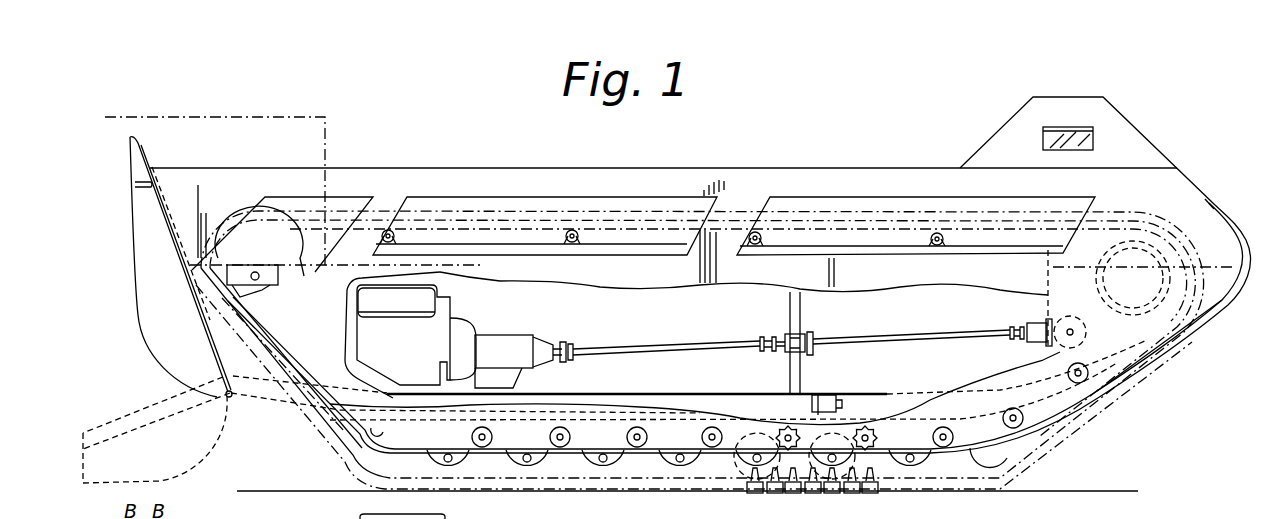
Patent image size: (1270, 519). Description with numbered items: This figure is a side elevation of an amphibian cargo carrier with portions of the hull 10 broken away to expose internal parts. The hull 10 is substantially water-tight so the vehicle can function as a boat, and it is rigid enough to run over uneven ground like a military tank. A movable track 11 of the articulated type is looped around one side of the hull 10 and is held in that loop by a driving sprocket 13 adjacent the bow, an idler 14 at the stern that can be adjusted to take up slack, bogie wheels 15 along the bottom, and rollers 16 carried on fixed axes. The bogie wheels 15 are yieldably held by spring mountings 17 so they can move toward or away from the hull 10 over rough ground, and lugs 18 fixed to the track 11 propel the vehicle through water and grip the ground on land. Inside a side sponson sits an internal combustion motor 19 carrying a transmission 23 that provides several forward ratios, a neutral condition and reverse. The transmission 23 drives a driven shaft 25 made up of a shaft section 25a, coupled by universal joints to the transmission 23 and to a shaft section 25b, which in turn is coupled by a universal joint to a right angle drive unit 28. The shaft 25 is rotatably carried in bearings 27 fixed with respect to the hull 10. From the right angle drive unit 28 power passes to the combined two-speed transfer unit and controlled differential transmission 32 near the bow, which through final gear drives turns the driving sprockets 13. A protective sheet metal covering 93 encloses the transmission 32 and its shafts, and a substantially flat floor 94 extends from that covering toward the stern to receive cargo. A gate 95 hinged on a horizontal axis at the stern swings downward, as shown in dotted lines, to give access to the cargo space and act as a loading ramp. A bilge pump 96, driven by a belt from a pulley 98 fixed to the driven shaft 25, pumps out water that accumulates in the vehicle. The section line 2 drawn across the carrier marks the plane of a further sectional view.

The section line 2- 2 is at (105, 132).
The hull 10 is at (1037, 430).
The track 11 is at (872, 497).
The driving sprocket 13 is at (1190, 328).
The idler 14 is at (323, 313).
The bogie wheel 15 is at (680, 476).
The roller 16 is at (573, 246).
The spring mounting 17 is at (775, 438).
The lug 18 is at (812, 494).
The motor 19 is at (446, 308).
The transmission 23 is at (500, 335).
The driven shaft 25 is at (791, 336).
The shaft section 25a is at (712, 348).
The shaft section 25b is at (908, 335).
The bearing 27 is at (801, 332).
The right angle drive unit 28 is at (1043, 318).
The combined two-speed transfer unit and controlled differential transmission 32 is at (1148, 360).
The sheet metal covering 93 is at (1048, 281).
The floor 94 is at (640, 383).
The gate 95 is at (138, 232).
The bilge pump 96 is at (826, 395).
The pulley 98 is at (815, 347).